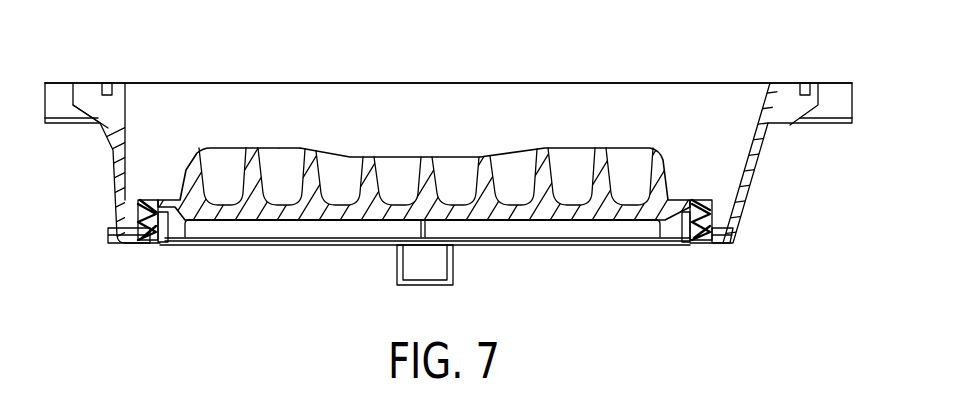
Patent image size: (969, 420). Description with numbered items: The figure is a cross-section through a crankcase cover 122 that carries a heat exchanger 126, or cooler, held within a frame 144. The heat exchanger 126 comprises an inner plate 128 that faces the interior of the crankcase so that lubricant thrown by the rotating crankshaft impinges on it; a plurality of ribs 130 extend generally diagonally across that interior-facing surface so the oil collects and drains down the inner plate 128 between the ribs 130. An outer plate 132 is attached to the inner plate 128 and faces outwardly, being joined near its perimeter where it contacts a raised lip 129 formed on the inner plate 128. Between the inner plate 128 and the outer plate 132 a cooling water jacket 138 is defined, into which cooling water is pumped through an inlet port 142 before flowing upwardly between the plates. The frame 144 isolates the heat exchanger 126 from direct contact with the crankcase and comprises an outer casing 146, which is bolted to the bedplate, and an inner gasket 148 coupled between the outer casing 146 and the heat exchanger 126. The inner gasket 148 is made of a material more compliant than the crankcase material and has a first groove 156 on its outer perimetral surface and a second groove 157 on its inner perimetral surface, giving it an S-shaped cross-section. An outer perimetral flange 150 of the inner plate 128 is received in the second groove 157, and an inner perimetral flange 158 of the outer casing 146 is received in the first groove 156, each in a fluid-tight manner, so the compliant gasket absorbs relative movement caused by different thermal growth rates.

The crankcase cover 122 is at (698, 48).
The heat exchanger 126 is at (178, 250).
The inner plate 128 is at (437, 157).
The raised lip 129 is at (677, 244).
The ribs 130 is at (360, 155).
The outer plate 132 is at (590, 244).
The cooling water jacket 138 is at (527, 240).
The inlet port 142 is at (425, 288).
The frame 144 is at (448, 183).
The outer casing 146 is at (745, 178).
The inner gasket 148 is at (138, 214).
The outer perimetral flange 150 is at (162, 210).
The first groove 156 is at (722, 234).
The second groove 157 is at (694, 205).
The inner perimetral flange 158 is at (122, 233).